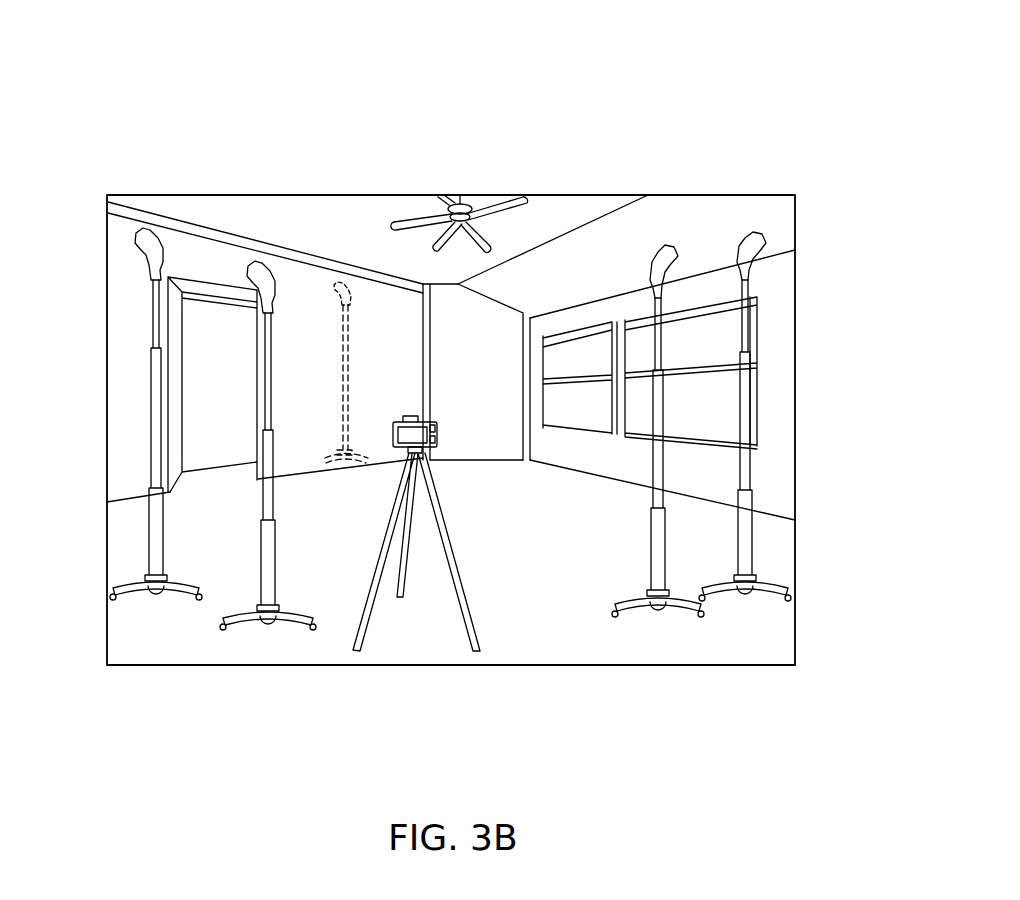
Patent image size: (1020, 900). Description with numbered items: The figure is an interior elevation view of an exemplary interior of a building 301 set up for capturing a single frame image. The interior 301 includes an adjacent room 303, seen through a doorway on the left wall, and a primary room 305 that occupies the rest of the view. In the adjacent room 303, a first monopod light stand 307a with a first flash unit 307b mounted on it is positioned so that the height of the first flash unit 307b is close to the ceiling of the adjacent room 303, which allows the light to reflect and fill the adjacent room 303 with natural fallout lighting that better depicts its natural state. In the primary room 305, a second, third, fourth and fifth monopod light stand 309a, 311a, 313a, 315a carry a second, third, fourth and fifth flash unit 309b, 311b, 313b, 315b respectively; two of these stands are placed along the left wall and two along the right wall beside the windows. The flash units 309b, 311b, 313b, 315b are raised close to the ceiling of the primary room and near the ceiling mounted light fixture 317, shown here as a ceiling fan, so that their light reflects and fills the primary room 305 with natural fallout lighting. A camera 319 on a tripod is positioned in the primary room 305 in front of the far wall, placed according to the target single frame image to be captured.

The interior of a building 301 is at (130, 72).
The adjacent room 303 is at (238, 435).
The primary room 305 is at (548, 554).
The first monopod light stand 307a is at (350, 360).
The first flash unit 307b is at (348, 285).
The second monopod light stand 309a is at (152, 390).
The second flash unit 309b is at (153, 228).
The third monopod light stand 311a is at (275, 500).
The third flash unit 311b is at (266, 257).
The fourth monopod light stand 313a is at (657, 353).
The fourth flash unit 313b is at (672, 246).
The fifth monopod light stand 315a is at (750, 463).
The fifth flash unit 315b is at (757, 233).
The ceiling mounted light fixture 317 is at (462, 207).
The camera 319 is at (437, 433).